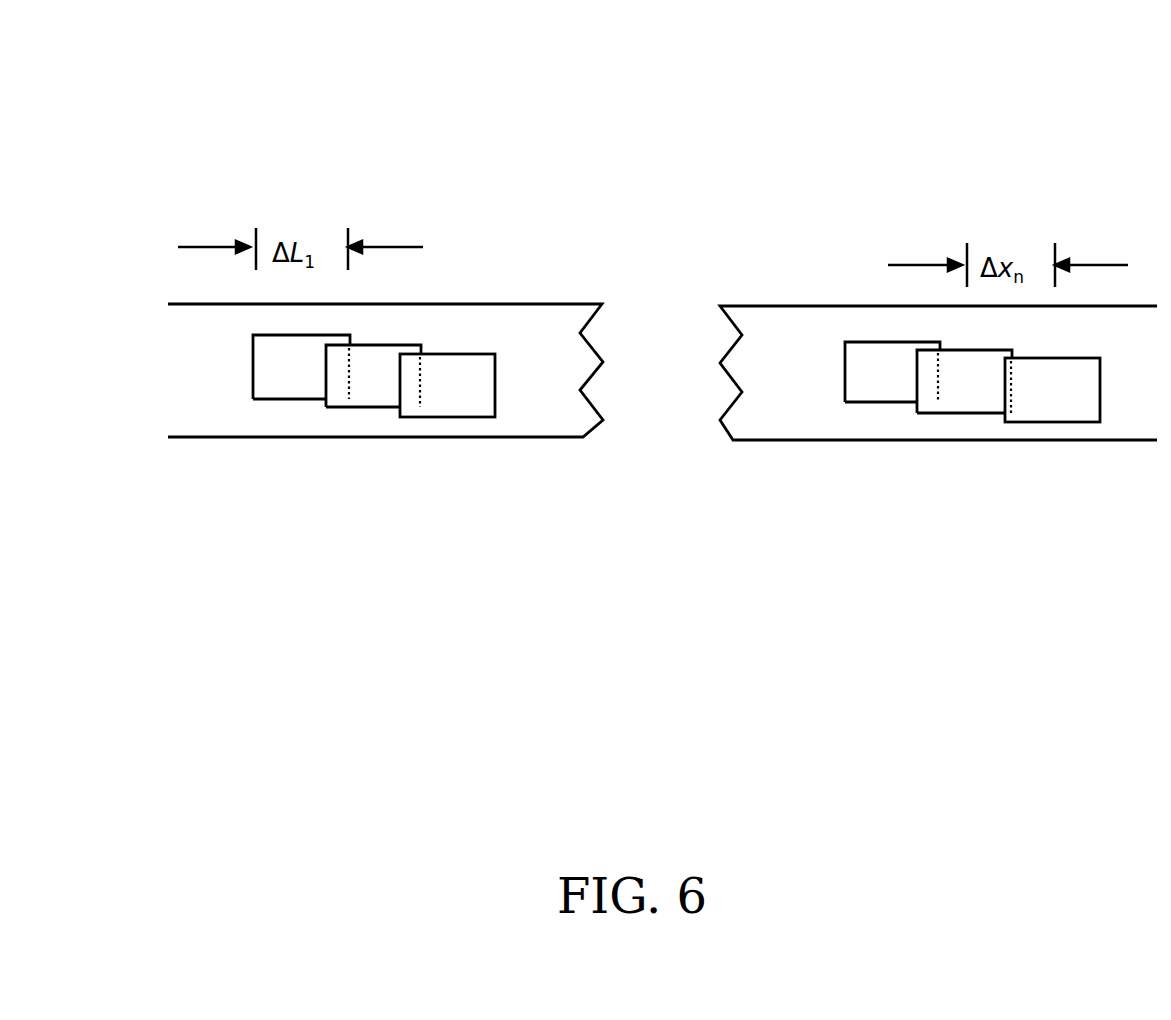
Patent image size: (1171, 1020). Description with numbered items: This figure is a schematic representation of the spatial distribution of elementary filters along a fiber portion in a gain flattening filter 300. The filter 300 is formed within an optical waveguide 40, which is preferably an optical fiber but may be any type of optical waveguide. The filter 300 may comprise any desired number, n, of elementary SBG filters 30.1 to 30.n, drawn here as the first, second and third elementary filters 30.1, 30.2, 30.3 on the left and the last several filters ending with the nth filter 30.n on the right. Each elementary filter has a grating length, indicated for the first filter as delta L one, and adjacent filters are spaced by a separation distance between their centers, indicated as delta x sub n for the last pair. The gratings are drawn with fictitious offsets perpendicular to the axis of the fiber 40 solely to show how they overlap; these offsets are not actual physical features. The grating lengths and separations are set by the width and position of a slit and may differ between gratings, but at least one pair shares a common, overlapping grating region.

The gain flattening filter 300 is at (411, 42).
The optical waveguide 40 is at (533, 304).
The elementary SBG filter 30.1 is at (266, 399).
The elementary SBG filter 30.2 is at (368, 407).
The elementary SBG filter 30.3 is at (445, 417).
The elementary SBG filter 30.n is at (1038, 422).